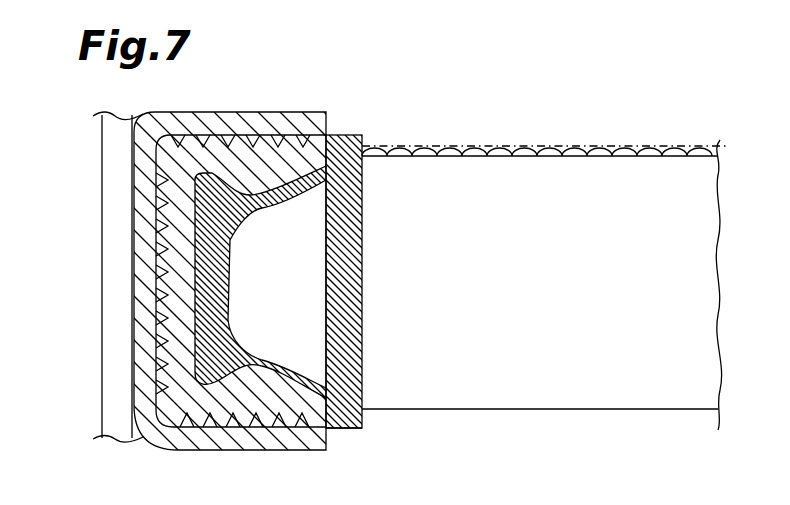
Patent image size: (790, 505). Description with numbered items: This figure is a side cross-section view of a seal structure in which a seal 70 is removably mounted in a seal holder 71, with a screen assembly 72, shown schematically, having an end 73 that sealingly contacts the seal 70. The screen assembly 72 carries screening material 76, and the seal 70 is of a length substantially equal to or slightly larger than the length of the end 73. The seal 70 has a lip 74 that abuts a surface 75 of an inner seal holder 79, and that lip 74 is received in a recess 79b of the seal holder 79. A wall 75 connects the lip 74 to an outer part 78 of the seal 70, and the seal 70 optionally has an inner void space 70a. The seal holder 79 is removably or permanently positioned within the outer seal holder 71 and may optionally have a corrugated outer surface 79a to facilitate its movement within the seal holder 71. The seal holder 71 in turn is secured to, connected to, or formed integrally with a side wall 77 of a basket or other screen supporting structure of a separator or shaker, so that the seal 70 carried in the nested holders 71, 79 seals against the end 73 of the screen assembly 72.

The seal 70 is at (345, 135).
The inner void space 70a is at (287, 278).
The seal holder 71 is at (297, 123).
The screen assembly 72 is at (597, 222).
The end 73 is at (362, 350).
The lip 74 is at (150, 408).
The wall 75 is at (197, 248).
The screening material 76 is at (670, 143).
The side wall 77 is at (113, 372).
The outer part 78 is at (336, 430).
The seal holder 79 is at (222, 152).
The corrugated outer surface 79a is at (258, 428).
The recess 79b is at (160, 172).